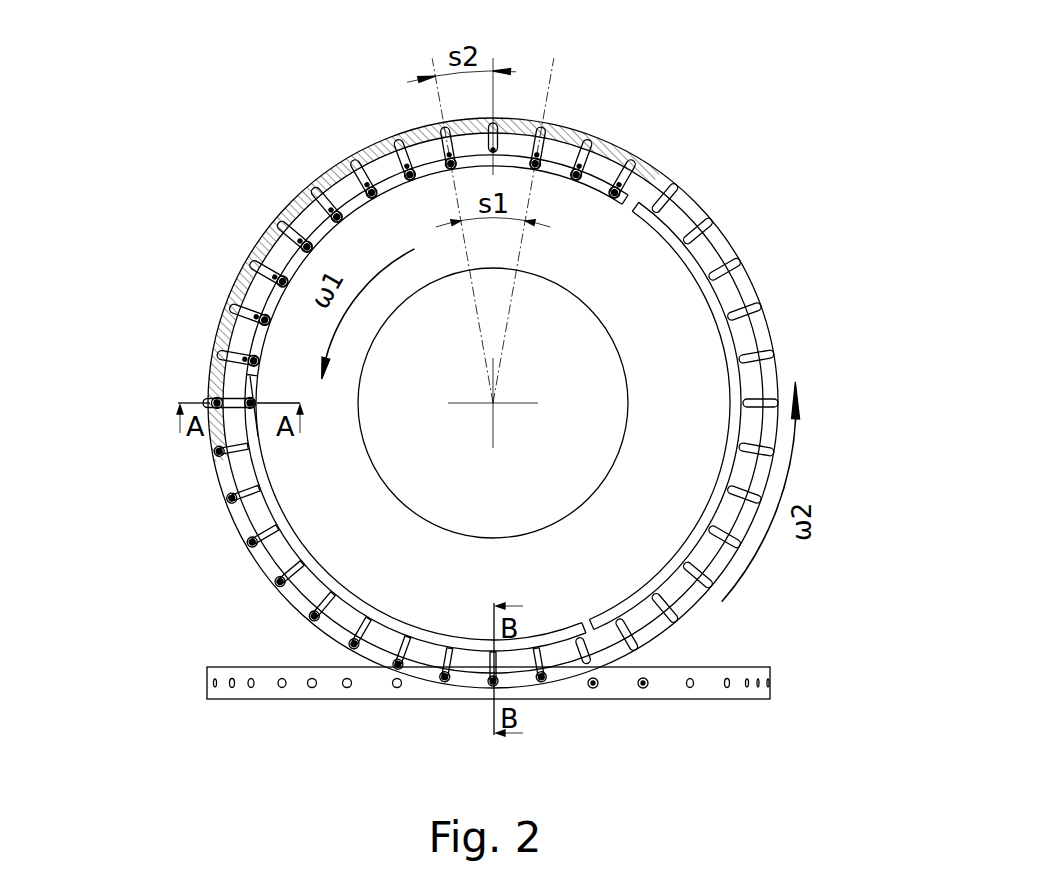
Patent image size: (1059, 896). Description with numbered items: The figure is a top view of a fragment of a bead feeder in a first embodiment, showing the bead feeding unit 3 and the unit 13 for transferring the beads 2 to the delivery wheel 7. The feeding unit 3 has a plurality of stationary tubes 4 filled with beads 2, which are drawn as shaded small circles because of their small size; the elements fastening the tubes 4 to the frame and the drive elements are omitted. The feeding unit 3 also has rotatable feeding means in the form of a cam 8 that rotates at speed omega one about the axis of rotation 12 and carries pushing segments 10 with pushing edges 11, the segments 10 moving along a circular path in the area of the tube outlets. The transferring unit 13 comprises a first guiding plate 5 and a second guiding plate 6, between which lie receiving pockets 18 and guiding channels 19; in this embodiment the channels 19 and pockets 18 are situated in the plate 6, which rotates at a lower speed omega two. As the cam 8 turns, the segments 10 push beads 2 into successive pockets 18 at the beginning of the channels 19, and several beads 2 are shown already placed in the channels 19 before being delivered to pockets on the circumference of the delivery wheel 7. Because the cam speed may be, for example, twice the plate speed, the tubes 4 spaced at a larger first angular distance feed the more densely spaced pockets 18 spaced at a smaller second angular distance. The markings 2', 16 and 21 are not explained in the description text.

The bead 2 is at (185, 392).
The guide segment slots 2' is at (258, 271).
The bead feeding unit 3 is at (322, 107).
The tube 4 is at (614, 190).
The first guiding plate 5 is at (705, 250).
The second guiding plate 6 is at (697, 202).
The delivery wheel 7 is at (303, 697).
The cam 8 is at (295, 495).
The pushing segment 10 is at (638, 207).
The pushing edge 11 is at (630, 203).
The axis of rotation 12 is at (493, 403).
The unit for transferring the beads 13 is at (252, 182).
The guide track 16 is at (753, 380).
The receiving pocket 18 is at (449, 155).
The guiding channel 19 is at (306, 178).
The slot 21 is at (408, 148).